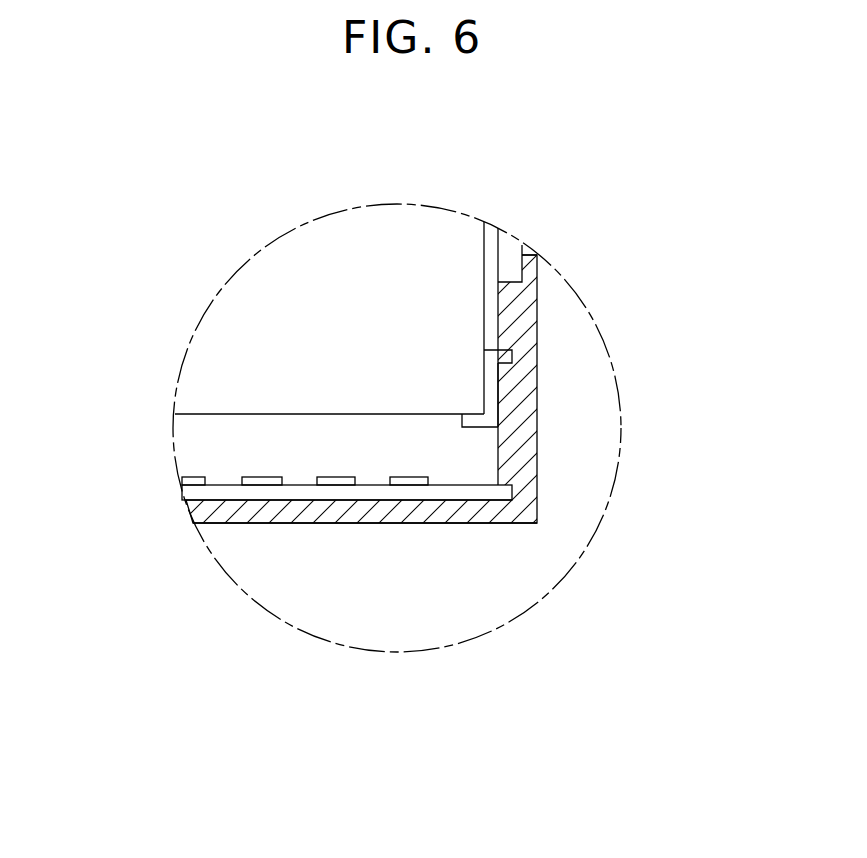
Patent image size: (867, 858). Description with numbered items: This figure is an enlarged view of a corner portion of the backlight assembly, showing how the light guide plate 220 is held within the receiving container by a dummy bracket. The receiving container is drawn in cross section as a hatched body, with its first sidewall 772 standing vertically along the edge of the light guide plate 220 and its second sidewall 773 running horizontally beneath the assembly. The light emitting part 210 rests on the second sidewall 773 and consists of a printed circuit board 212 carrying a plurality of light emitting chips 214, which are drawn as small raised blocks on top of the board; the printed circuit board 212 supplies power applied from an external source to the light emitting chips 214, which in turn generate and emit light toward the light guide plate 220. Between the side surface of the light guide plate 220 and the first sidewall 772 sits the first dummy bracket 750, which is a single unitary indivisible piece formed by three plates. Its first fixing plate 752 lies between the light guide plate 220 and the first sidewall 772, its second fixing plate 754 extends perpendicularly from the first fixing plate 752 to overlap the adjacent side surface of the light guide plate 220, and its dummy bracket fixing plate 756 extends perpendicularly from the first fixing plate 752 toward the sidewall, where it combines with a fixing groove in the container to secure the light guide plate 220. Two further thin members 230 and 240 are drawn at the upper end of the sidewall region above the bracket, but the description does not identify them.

The light emitting part 210 is at (275, 481).
The printed circuit board 212 is at (183, 490).
The light emitting chips 214 is at (185, 478).
The light guide plate 220 is at (298, 295).
The side member 230 is at (497, 229).
The top protrusion 240 is at (537, 256).
The first dummy bracket 750 is at (606, 393).
The first fixing plate 752 is at (493, 390).
The second fixing plate 754 is at (475, 421).
The dummy bracket fixing plate 756 is at (513, 355).
The first sidewall 772 is at (527, 300).
The second sidewall 773 is at (392, 510).